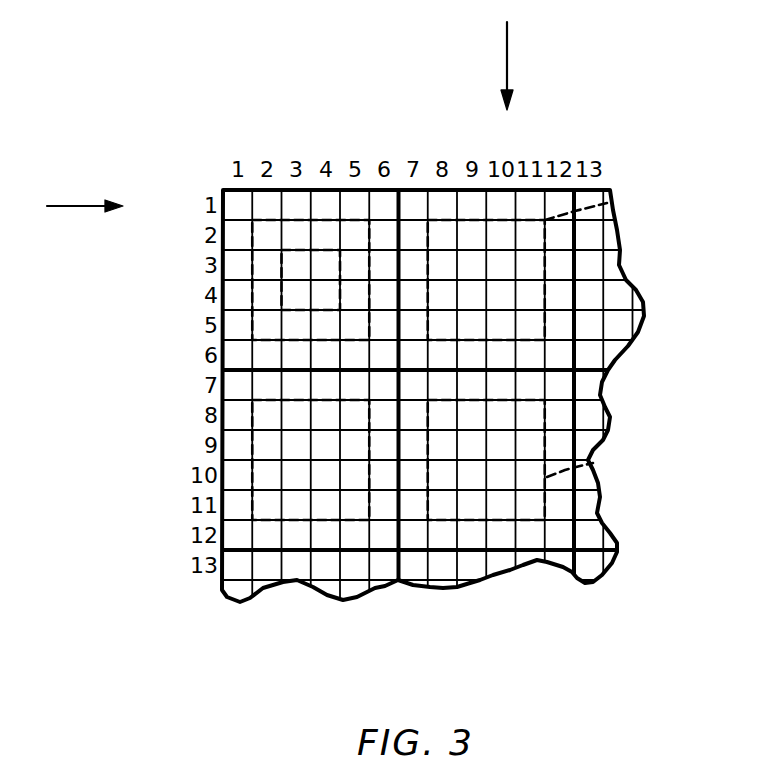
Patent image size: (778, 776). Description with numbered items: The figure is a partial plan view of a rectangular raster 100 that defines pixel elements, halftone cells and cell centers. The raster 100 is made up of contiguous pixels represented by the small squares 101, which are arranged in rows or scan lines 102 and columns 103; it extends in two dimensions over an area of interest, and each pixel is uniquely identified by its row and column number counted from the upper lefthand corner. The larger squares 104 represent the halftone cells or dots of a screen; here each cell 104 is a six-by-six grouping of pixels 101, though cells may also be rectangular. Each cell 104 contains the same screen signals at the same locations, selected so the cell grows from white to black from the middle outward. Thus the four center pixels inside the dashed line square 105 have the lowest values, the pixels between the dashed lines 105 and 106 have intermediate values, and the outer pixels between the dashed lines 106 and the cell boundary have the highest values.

The raster 100 is at (660, 303).
The pixels 101 is at (240, 194).
The rows or scan lines 102 is at (88, 210).
The columns 103 is at (509, 62).
The halftone cells 104 is at (535, 191).
The dashed line square 105 is at (283, 275).
The dashed lines 106 is at (303, 212).